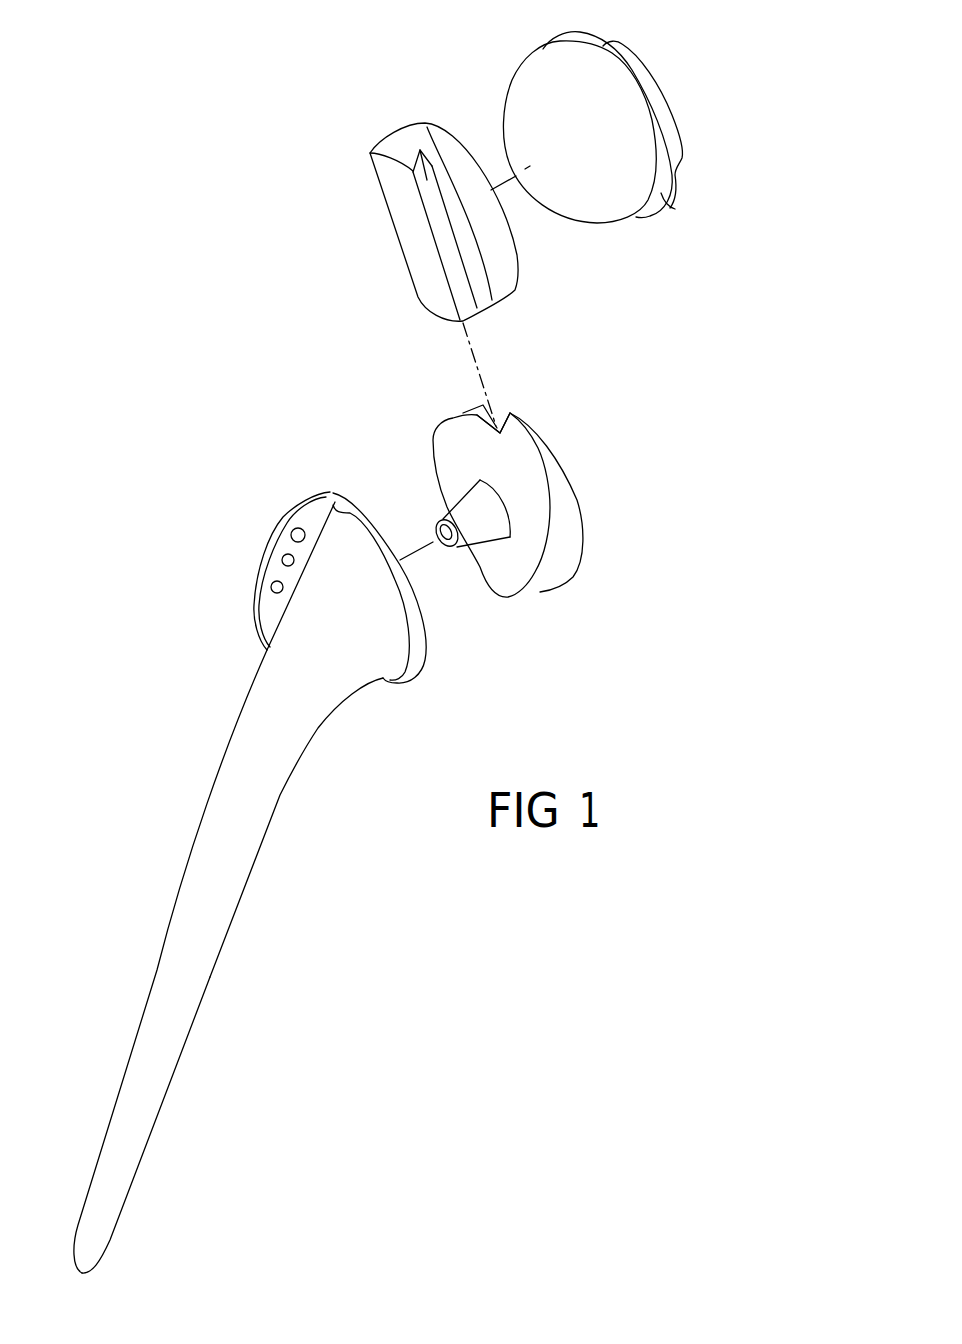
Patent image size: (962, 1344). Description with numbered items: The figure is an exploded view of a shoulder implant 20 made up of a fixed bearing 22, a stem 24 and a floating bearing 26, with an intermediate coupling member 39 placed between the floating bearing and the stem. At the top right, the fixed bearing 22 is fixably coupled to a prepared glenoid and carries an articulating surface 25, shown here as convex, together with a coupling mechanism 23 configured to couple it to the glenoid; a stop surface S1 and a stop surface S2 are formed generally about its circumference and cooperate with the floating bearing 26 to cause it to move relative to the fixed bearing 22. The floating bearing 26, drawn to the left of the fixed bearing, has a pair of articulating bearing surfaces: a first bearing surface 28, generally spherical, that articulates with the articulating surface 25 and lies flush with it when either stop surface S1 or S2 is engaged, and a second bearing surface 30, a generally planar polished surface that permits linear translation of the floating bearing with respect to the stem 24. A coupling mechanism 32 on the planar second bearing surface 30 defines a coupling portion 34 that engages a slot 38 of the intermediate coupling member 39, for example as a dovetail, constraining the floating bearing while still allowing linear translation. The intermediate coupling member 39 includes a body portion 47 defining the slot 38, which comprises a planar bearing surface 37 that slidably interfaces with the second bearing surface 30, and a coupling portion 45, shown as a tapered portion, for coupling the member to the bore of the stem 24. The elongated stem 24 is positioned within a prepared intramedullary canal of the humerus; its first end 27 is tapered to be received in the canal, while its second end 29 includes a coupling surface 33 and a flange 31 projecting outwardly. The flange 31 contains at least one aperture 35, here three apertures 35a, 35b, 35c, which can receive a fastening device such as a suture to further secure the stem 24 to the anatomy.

The shoulder implant 20 is at (284, 822).
The fixed bearing 22 is at (585, 168).
The coupling mechanism 23 is at (668, 118).
The stem 24 is at (270, 887).
The articulating surface 25 is at (527, 107).
The floating bearing 26 is at (410, 176).
The first end 27 is at (178, 1030).
The first bearing surface 28 is at (505, 257).
The second end 29 is at (422, 703).
The second bearing surface 30 is at (420, 257).
The flange 31 is at (318, 541).
The coupling mechanism 32 is at (410, 208).
The coupling surface 33 is at (428, 640).
The coupling portion 34 is at (424, 148).
The aperture 35 is at (223, 546).
The aperture 35a is at (273, 593).
The aperture 35b is at (282, 560).
The aperture 35c is at (292, 530).
The planar bearing surface 37 is at (523, 485).
The slot 38 is at (507, 418).
The intermediate coupling member 39 is at (502, 530).
The coupling portion 45 is at (462, 518).
The body portion 47 is at (527, 455).
The stop surface S1 is at (664, 199).
The stop surface S2 is at (558, 32).